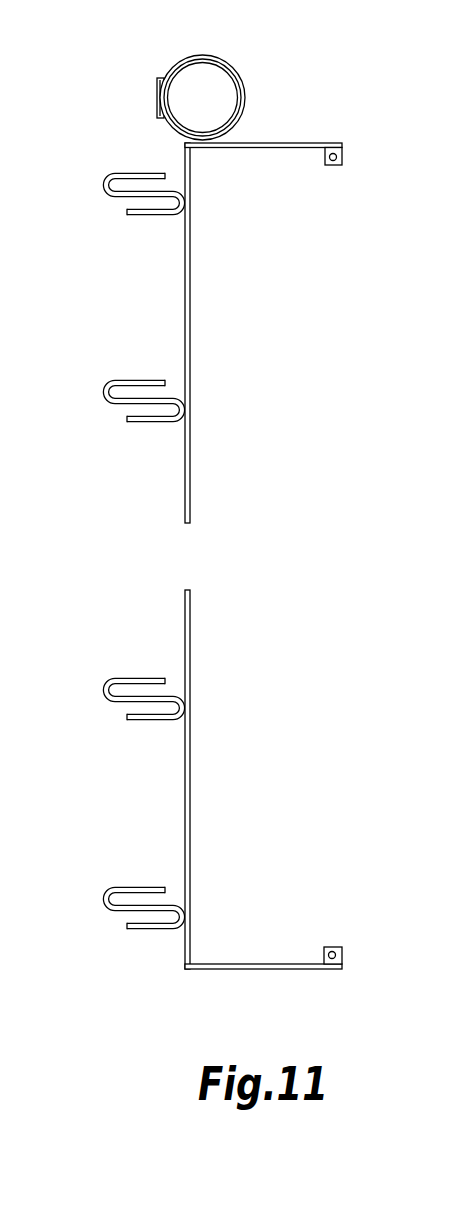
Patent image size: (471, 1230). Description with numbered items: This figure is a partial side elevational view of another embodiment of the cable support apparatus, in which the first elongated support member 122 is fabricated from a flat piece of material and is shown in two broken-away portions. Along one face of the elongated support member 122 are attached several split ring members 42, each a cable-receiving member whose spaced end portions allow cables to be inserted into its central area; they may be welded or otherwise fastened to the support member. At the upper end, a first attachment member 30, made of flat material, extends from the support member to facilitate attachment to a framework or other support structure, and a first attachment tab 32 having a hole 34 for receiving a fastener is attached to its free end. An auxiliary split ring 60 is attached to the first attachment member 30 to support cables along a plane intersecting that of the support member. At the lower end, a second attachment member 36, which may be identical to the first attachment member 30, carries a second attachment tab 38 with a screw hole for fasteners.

The auxiliary split ring 60 is at (240, 80).
The first attachment member 30 is at (277, 143).
The first attachment tab 32 is at (342, 150).
The hole 34 is at (336, 164).
The first elongated support member 122 is at (190, 313).
The split ring member 42 is at (100, 395).
The second attachment tab 38 is at (342, 952).
The second attachment member 36 is at (295, 970).